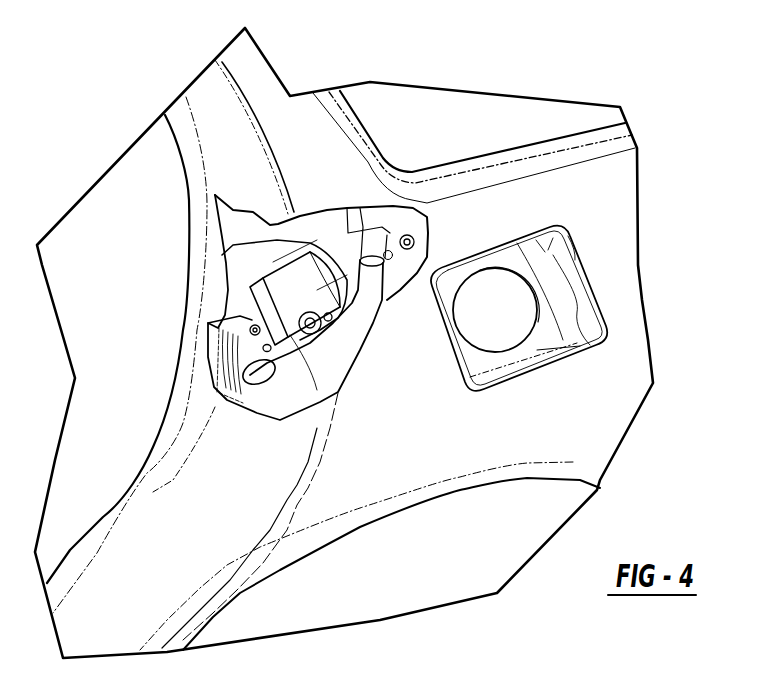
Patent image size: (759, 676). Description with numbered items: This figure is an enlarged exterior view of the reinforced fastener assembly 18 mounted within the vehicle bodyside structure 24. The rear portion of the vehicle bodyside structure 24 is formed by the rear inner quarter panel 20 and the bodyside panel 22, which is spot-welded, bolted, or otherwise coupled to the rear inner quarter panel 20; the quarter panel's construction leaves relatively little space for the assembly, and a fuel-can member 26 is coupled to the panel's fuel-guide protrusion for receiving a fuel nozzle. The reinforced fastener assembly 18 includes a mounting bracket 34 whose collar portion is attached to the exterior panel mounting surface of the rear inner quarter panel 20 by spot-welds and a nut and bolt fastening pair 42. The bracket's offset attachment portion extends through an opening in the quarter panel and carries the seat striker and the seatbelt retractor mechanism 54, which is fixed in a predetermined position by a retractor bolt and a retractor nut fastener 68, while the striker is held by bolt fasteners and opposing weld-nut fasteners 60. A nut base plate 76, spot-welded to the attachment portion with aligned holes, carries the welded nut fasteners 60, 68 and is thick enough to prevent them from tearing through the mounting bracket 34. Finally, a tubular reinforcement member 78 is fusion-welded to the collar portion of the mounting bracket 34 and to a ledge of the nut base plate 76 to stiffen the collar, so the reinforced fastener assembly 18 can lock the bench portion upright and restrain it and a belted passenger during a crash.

The reinforced fastener assembly 18 is at (303, 392).
The rear inner quarter panel 20 is at (533, 142).
The bodyside panel 22 is at (606, 218).
The vehicle bodyside structure 24 is at (155, 447).
The fuel-can member 26 is at (607, 344).
The mounting bracket 34 is at (350, 210).
The nut and bolt fastening pair 42 is at (414, 244).
The seatbelt retractor mechanism 54 is at (250, 283).
The weld-nut fasteners 60 is at (249, 326).
The retractor nut fastener 68 is at (310, 340).
The nut base plate 76 is at (243, 347).
The tubular reinforcement member 78 is at (380, 286).